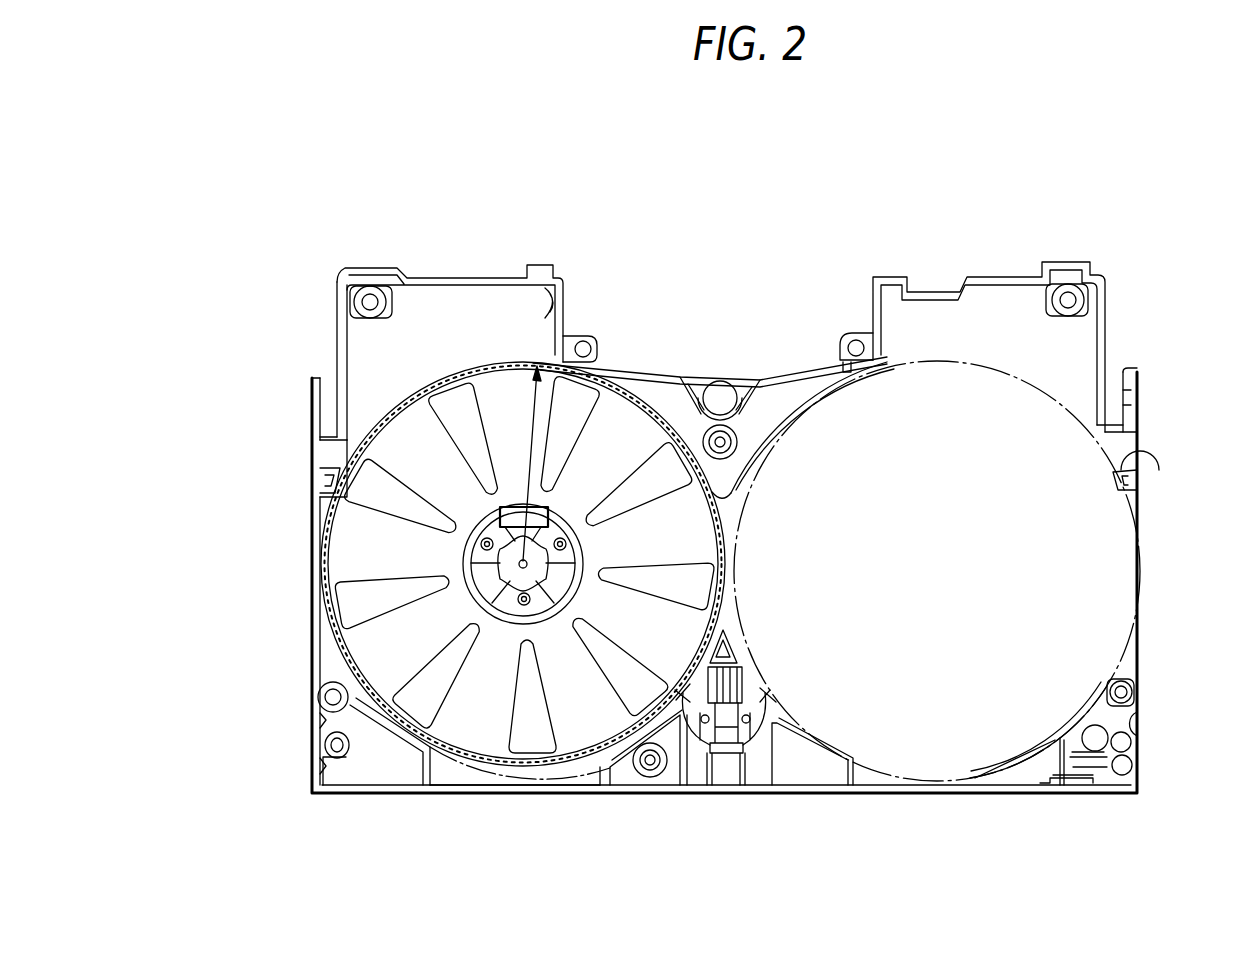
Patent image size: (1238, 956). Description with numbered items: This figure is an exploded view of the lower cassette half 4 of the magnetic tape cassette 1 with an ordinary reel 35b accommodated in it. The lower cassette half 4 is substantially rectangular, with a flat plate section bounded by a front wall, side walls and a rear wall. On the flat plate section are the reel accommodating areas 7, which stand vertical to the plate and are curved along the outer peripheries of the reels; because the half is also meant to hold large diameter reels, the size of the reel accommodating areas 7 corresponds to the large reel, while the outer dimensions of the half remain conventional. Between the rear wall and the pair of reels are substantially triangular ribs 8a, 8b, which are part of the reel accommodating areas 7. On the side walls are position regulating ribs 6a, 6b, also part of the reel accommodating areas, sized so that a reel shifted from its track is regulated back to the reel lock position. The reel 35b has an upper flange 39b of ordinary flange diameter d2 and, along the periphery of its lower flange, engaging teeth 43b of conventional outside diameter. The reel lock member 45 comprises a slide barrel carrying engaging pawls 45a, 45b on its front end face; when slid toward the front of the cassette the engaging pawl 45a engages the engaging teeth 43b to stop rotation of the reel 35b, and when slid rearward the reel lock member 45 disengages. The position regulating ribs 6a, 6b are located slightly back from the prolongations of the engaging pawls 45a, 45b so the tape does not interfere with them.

The magnetic tape cassette 1 is at (826, 243).
The lower cassette half 4 is at (988, 277).
The position regulating rib 6a is at (333, 471).
The position regulating rib 6b is at (1148, 455).
The reel accommodating areas 7 is at (788, 397).
The substantially triangular rib 8a is at (592, 793).
The substantially triangular rib 8b is at (872, 793).
The reel 35b is at (326, 553).
The upper flange 39b is at (413, 437).
The engaging teeth 43b is at (550, 772).
The reel lock member 45 is at (749, 693).
The engaging pawl 45a is at (683, 690).
The engaging pawl 45b is at (778, 700).
The ordinary flange diameter d2 is at (528, 463).